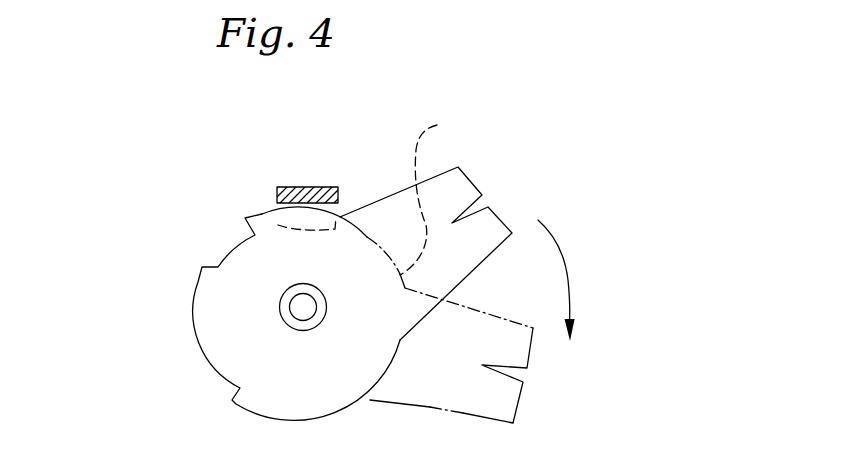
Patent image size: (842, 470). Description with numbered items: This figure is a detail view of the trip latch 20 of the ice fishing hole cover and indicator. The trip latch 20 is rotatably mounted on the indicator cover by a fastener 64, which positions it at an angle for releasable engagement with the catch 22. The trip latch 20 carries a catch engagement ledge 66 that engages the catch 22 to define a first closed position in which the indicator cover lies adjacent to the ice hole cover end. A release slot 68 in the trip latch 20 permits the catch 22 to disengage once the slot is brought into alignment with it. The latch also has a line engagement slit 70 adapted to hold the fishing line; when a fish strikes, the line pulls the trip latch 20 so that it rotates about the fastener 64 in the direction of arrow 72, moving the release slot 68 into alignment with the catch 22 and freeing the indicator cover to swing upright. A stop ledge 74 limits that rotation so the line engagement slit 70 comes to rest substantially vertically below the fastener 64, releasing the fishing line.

The trip latch 20 is at (299, 165).
The catch 22 is at (323, 187).
The fastener 64 is at (280, 307).
The catch engagement ledge 66 is at (95, 198).
The release slot 68 is at (276, 207).
The line engagement slit 70 is at (486, 198).
The arrow 72 is at (565, 263).
The stop ledge 74 is at (233, 398).